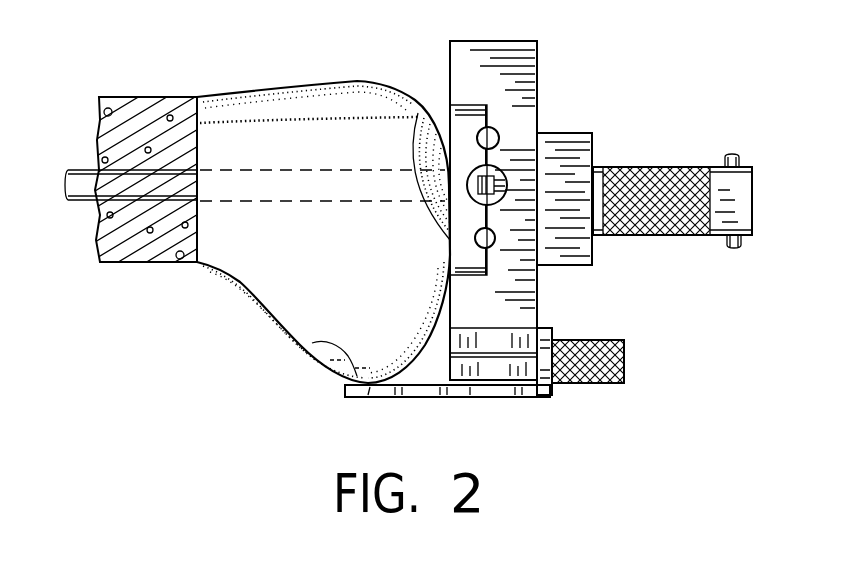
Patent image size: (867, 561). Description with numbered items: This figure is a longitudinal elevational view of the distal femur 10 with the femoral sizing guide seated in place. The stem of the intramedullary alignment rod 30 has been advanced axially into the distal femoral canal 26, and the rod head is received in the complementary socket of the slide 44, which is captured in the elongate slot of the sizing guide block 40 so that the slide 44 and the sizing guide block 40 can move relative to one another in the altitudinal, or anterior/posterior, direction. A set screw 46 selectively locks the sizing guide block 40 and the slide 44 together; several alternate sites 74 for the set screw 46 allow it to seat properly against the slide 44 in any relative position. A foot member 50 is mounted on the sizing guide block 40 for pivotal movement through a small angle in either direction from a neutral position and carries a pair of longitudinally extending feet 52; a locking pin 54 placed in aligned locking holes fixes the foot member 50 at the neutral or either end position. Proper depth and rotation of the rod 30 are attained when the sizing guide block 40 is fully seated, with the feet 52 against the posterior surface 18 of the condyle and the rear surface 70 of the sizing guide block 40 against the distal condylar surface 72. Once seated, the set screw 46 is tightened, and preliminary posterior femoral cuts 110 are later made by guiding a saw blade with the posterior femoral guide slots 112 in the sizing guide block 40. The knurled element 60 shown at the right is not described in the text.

The distal femur 10 is at (215, 92).
The posterior surface 18 is at (360, 398).
The distal femoral canal 26 is at (98, 200).
The intramedullary alignment rod 30 is at (80, 166).
The sizing guide block 40 is at (539, 39).
The slide 44 is at (594, 138).
The set screw 46 is at (496, 178).
The foot member 50 is at (542, 398).
The feet 52 is at (405, 399).
The locking pin 54 is at (598, 386).
The knurled rod 60 is at (745, 195).
The rear surface 70 is at (419, 112).
The distal condylar surface 72 is at (453, 242).
The alternate sites 74 is at (497, 132).
The preliminary posterior femoral cuts 110 is at (310, 343).
The posterior femoral guide slots 112 is at (507, 362).